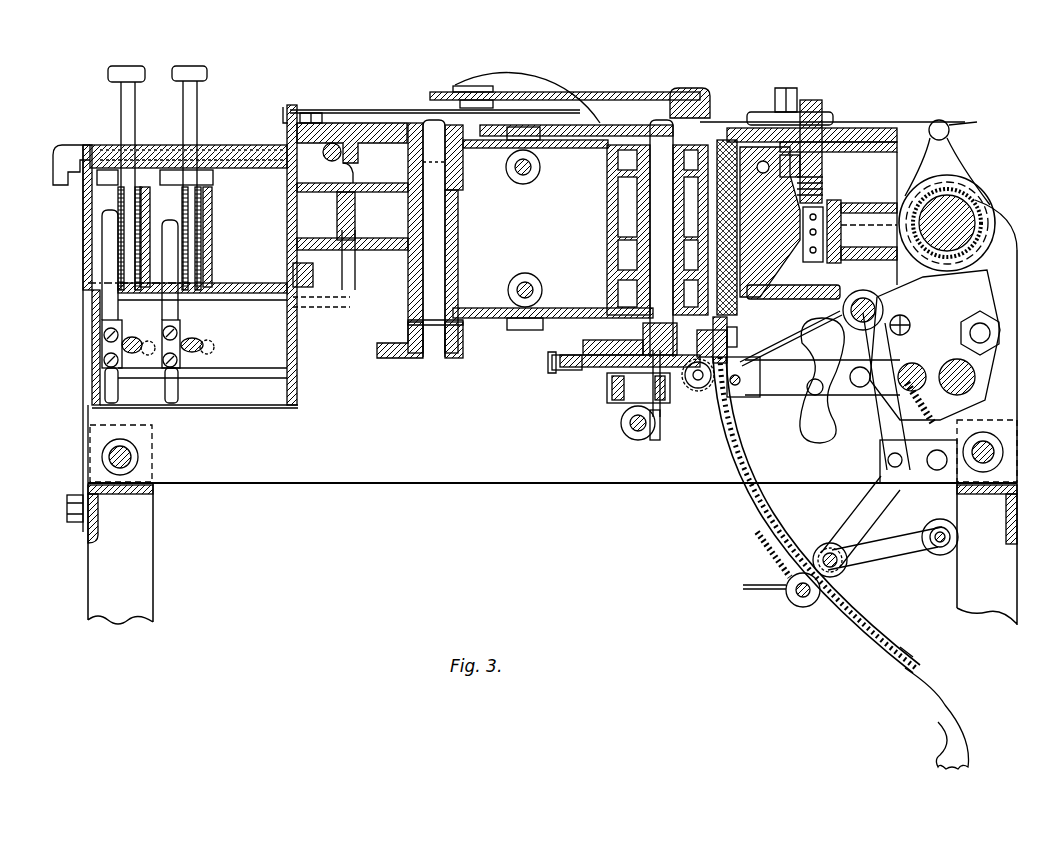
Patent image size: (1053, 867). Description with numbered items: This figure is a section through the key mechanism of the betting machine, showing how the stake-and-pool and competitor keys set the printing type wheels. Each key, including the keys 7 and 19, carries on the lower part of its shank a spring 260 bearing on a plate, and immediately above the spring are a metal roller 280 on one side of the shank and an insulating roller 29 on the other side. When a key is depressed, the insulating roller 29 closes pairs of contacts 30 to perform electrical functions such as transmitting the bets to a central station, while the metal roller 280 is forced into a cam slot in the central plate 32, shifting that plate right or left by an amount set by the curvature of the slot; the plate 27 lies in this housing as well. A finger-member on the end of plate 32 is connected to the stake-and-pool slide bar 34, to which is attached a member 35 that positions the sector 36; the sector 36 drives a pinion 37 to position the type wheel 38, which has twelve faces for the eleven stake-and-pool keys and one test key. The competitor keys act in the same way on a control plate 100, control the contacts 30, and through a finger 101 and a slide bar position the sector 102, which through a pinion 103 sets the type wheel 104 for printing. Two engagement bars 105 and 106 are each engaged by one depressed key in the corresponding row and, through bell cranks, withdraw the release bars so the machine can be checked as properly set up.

The knob 7 is at (125, 66).
The knob 19 is at (188, 66).
The insulating roller 29 is at (107, 173).
The metal roller 280 is at (213, 176).
The spring 260 is at (120, 193).
The control plate 100 is at (138, 230).
The contacts 30 is at (108, 252).
The central plate 32 is at (212, 232).
The plate 27 is at (243, 283).
The engagement bar 105 is at (140, 340).
The engagement bar 106 is at (195, 340).
The stake-and-pool slide bar 34 is at (300, 196).
The member 35 is at (331, 216).
The finger 101 is at (305, 250).
The sector 36 is at (478, 143).
The pinion 37 is at (642, 133).
The type wheel 38 is at (608, 207).
The type wheel 104 is at (612, 292).
The pinion 103 is at (638, 323).
The sector 102 is at (547, 318).